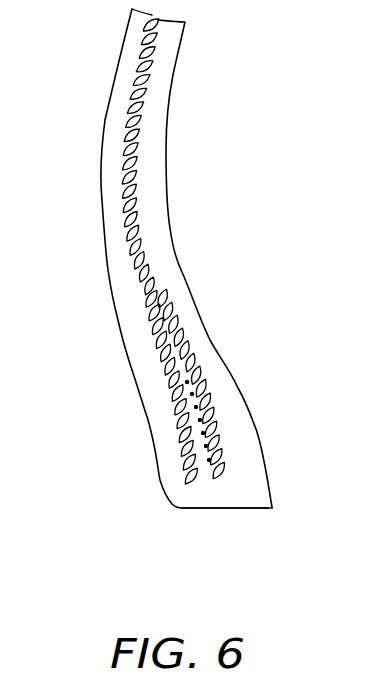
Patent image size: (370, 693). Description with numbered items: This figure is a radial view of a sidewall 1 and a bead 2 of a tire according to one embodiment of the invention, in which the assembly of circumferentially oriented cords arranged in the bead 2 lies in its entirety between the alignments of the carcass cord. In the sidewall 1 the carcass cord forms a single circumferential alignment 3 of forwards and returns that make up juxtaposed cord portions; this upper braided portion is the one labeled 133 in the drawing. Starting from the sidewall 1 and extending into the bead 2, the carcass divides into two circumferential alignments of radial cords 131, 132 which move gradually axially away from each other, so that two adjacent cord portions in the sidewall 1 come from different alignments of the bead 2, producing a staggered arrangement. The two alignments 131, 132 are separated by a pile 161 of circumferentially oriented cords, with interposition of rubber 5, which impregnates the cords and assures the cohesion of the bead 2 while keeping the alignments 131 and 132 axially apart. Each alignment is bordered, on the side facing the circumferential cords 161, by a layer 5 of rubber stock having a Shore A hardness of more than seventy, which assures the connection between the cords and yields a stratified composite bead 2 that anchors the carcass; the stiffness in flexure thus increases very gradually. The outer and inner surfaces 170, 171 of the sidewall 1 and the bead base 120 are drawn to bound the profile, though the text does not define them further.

The sidewall 1 is at (115, 206).
The bead 2 is at (152, 446).
The circumferential alignment 3 is at (139, 182).
The rubber layer 5 is at (218, 481).
The sole edge 120 is at (250, 510).
The circumferential alignment of radial carcass cords 131 is at (194, 347).
The circumferential alignment of radial carcass cords 132 is at (165, 362).
The circumferential alignment of radial carcass cords 133 is at (165, 113).
The pile of circumferentially oriented cords 161 is at (201, 420).
The outer layer 170 is at (130, 296).
The inner cover layer 171 is at (172, 277).